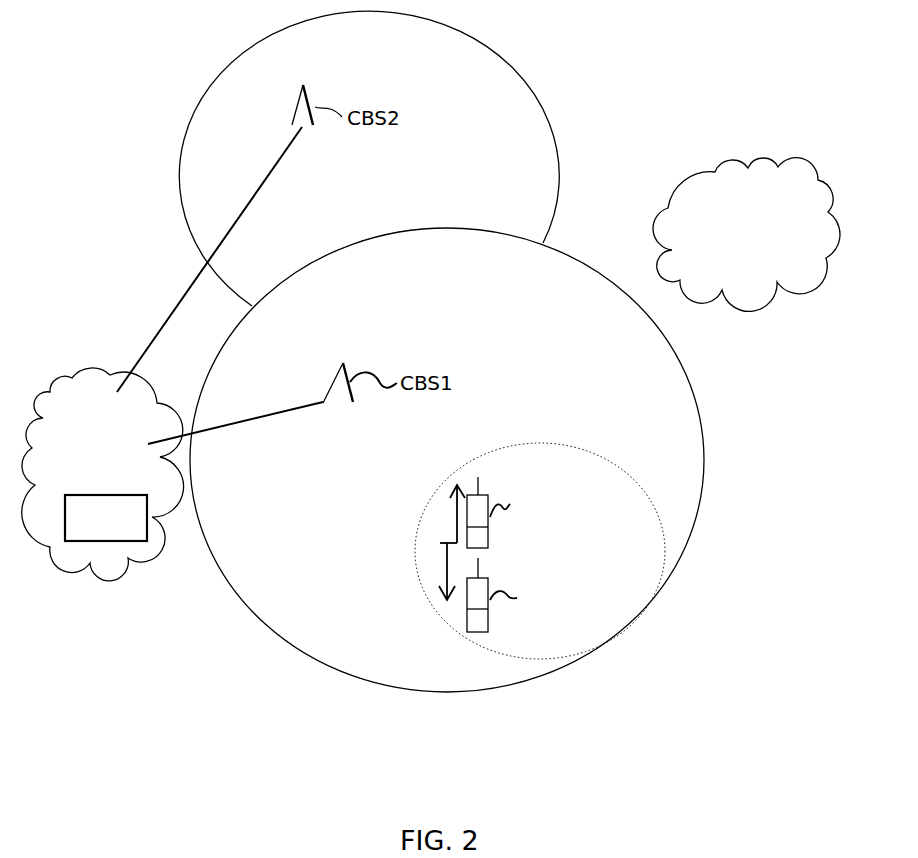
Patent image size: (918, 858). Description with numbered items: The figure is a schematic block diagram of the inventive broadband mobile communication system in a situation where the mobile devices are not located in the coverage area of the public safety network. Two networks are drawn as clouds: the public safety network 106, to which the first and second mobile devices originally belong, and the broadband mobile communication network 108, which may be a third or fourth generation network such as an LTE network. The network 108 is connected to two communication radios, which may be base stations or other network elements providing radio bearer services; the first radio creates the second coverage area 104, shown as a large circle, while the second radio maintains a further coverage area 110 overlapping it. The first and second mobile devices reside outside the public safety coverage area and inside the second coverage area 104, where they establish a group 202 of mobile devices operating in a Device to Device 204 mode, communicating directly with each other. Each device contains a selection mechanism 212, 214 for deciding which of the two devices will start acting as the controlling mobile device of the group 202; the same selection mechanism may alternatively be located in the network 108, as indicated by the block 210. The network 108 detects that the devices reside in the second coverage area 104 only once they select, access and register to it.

The second coverage area 104 is at (704, 460).
The public safety network 106 is at (748, 157).
The broadband mobile communication network 108 is at (105, 579).
The cell coverage area of cellular base station CBS2 110 is at (540, 103).
The group of mobile devices 202 is at (420, 583).
The Device to Device mode 204 is at (440, 543).
The selection mechanism 210 is at (106, 518).
The selection mechanism 212 is at (490, 530).
The selection mechanism 214 is at (490, 620).